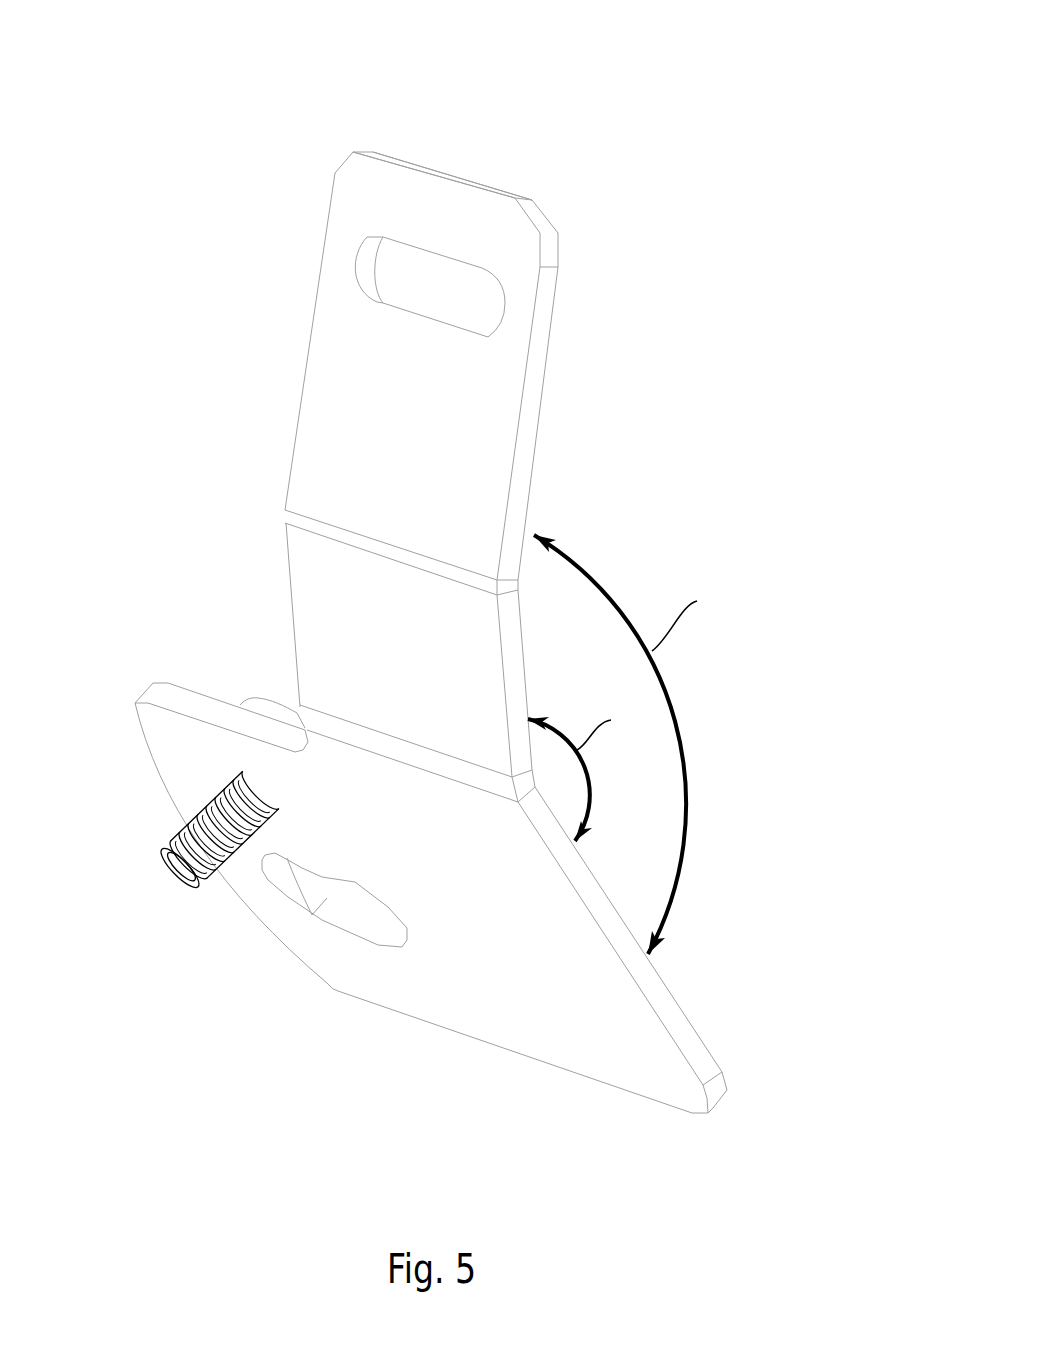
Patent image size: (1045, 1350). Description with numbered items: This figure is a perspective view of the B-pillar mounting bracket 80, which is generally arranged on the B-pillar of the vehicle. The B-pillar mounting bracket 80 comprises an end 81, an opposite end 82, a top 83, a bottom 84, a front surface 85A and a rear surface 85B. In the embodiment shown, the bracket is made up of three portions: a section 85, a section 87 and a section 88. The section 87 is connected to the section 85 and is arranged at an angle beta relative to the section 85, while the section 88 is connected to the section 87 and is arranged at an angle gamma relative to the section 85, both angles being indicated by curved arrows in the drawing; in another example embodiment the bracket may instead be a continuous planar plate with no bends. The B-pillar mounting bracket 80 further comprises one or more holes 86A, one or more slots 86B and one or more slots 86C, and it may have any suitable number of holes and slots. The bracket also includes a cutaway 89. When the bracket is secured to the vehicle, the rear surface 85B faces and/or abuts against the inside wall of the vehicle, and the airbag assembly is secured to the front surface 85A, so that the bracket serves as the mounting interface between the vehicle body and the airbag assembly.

The B-pillar mounting bracket 80 is at (435, 614).
The end 81 is at (424, 898).
The end 82 is at (667, 929).
The top 83 is at (442, 105).
The bottom 84 is at (515, 1077).
The section 85 is at (435, 955).
The front surface 85A is at (236, 888).
The rear surface 85B is at (677, 943).
The hole 86A is at (157, 820).
The slot 86B is at (286, 937).
The slot 86C is at (511, 305).
The section 87 is at (368, 662).
The section 88 is at (425, 295).
The cutaway 89 is at (392, 406).